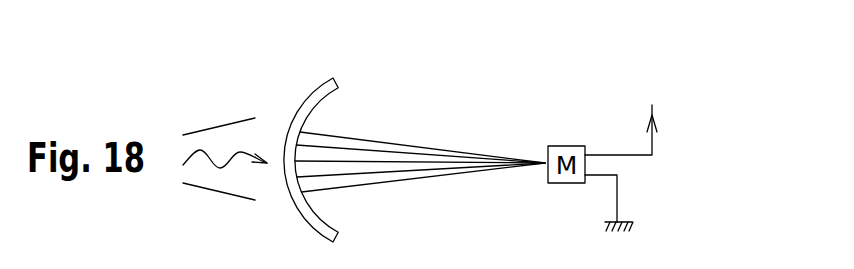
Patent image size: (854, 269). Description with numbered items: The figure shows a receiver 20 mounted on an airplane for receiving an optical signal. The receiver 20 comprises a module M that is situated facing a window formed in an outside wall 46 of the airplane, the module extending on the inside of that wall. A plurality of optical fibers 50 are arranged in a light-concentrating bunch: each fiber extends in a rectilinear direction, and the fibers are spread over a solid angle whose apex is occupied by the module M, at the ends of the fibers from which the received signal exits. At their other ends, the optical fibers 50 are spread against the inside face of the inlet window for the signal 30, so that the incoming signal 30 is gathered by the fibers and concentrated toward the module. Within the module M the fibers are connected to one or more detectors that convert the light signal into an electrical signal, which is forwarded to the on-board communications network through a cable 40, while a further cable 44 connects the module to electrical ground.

The receiver 20 is at (360, 94).
The signal 30 is at (200, 150).
The cable 40 is at (652, 141).
The cable 44 is at (617, 192).
The outside wall 46 is at (297, 210).
The optical fibers 50 is at (427, 147).